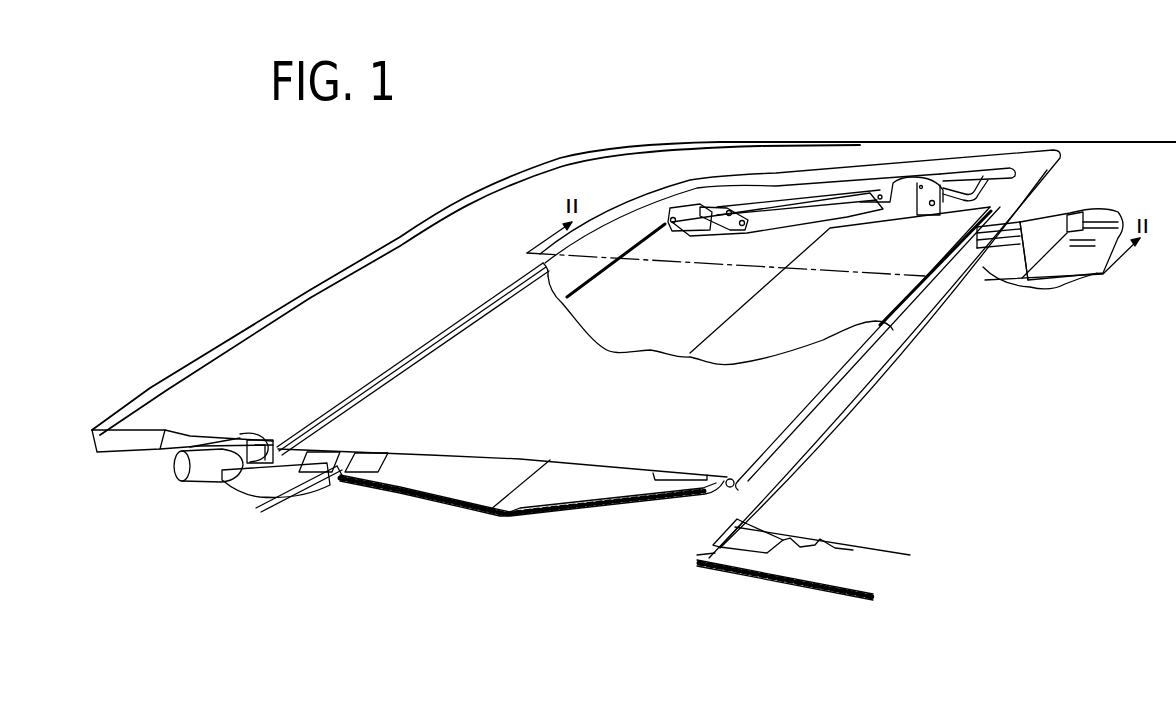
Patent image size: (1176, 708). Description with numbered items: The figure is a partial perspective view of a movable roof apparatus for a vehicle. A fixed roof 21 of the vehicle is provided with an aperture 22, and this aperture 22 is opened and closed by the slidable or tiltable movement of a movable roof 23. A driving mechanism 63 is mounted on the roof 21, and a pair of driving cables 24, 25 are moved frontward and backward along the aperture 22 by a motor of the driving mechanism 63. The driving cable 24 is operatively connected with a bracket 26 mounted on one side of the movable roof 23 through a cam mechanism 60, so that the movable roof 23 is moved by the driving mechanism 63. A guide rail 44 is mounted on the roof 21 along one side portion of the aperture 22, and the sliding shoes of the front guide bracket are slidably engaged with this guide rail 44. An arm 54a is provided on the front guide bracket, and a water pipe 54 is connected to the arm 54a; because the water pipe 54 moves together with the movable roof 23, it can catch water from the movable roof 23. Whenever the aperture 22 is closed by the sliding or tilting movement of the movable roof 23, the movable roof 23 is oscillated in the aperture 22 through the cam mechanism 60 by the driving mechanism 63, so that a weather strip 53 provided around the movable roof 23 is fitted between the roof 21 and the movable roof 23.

The fixed roof 21 is at (1079, 369).
The aperture 22 is at (643, 530).
The movable roof 23 is at (453, 340).
The driving cable 24 is at (247, 500).
The driving cable 25 is at (273, 503).
The bracket 26 is at (889, 185).
The guide rail 44 is at (1103, 225).
The weather strip 53 is at (727, 492).
The water pipe 54 is at (743, 540).
The arm 54a is at (1096, 227).
The cam mechanism 60 is at (990, 166).
The driving mechanism 63 is at (188, 490).